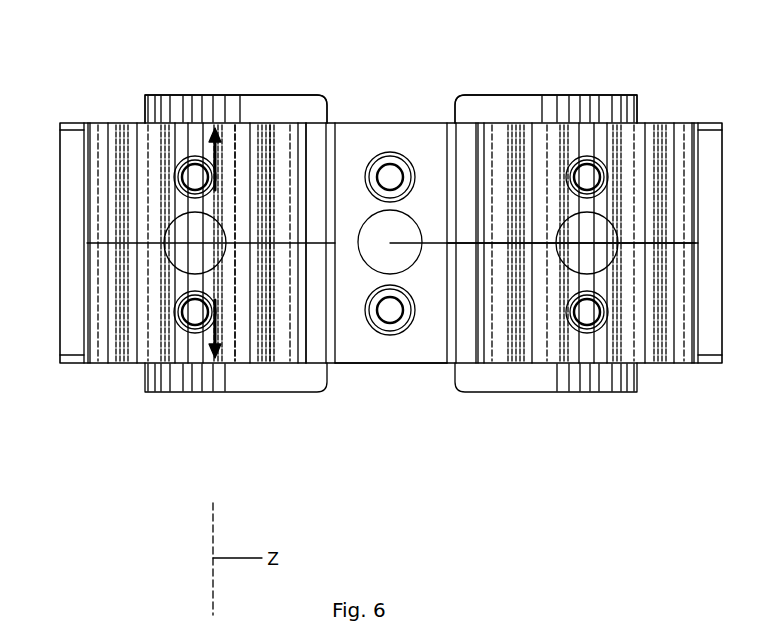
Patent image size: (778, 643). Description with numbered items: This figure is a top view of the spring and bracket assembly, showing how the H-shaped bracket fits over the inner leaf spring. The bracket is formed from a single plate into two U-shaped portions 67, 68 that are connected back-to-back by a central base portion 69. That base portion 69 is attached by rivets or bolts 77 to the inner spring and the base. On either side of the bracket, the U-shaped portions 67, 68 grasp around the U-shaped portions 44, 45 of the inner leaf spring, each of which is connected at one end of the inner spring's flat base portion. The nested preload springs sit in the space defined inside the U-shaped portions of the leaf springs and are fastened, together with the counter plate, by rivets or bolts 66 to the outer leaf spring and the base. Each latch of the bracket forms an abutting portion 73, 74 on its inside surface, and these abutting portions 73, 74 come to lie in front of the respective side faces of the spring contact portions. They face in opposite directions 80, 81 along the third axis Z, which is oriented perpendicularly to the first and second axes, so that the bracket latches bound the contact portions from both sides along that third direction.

The U-shaped portion 44 is at (306, 344).
The U-shaped portion 45 is at (474, 342).
The rivets or bolts 66 is at (185, 155).
The U-shaped portion 67 is at (327, 110).
The U-shaped portion 68 is at (464, 92).
The base portion 69 is at (415, 352).
The abutting portion 73 is at (218, 362).
The abutting portion 74 is at (210, 148).
The rivets or bolts 77 is at (398, 152).
The direction 80 is at (233, 322).
The direction 81 is at (271, 133).